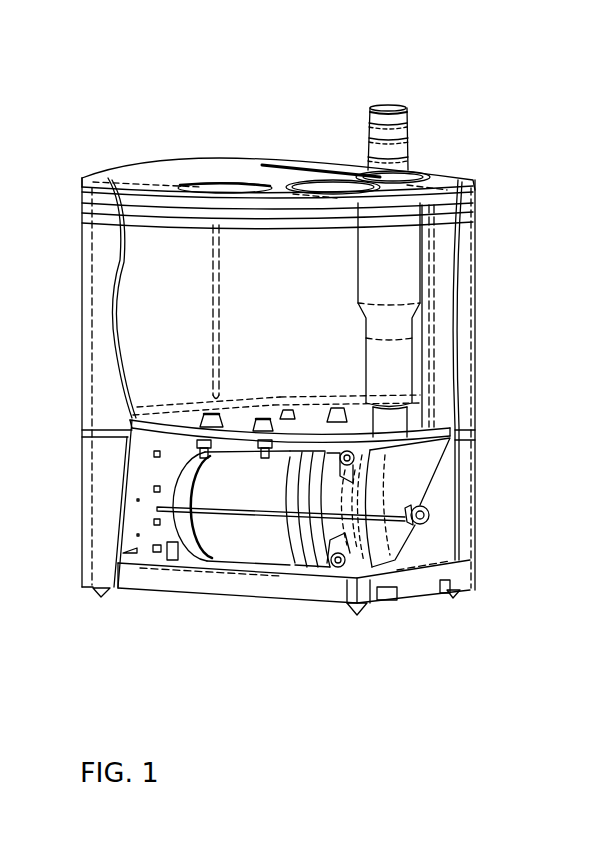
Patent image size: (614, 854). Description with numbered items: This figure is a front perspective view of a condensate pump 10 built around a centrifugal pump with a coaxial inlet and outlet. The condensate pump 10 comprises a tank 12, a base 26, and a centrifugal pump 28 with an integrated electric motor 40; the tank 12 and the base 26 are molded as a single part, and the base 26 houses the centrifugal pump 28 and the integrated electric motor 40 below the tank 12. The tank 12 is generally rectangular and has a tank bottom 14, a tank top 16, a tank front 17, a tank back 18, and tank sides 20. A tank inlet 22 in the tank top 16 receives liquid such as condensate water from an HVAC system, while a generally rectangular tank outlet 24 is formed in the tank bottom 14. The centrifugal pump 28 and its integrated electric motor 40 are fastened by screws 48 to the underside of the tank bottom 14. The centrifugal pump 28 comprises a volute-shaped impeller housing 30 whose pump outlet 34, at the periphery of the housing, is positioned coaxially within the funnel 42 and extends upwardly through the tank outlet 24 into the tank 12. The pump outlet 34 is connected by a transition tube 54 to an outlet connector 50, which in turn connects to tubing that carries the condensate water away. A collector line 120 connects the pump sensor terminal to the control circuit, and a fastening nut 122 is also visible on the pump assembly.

The condensate pump 10 is at (522, 131).
The tank 12 is at (478, 208).
The tank bottom 14 is at (175, 420).
The tank top 16 is at (183, 168).
The tank front 17 is at (103, 238).
The tank back 18 is at (240, 250).
The tank sides 20 is at (147, 242).
The tank inlet 22 is at (325, 187).
The tank outlet 24 is at (358, 425).
The base 26 is at (478, 509).
The centrifugal pump 28 is at (350, 562).
The volute-shaped impeller housing 30 is at (378, 548).
The pump outlet 34 is at (407, 423).
The integrated electric motor 40 is at (205, 535).
The funnel 42 is at (424, 468).
The screws 48 is at (263, 420).
The outlet connector 50 is at (405, 112).
The transition tube 54 is at (403, 283).
The collector line 120 is at (238, 511).
The nut 122 is at (424, 517).